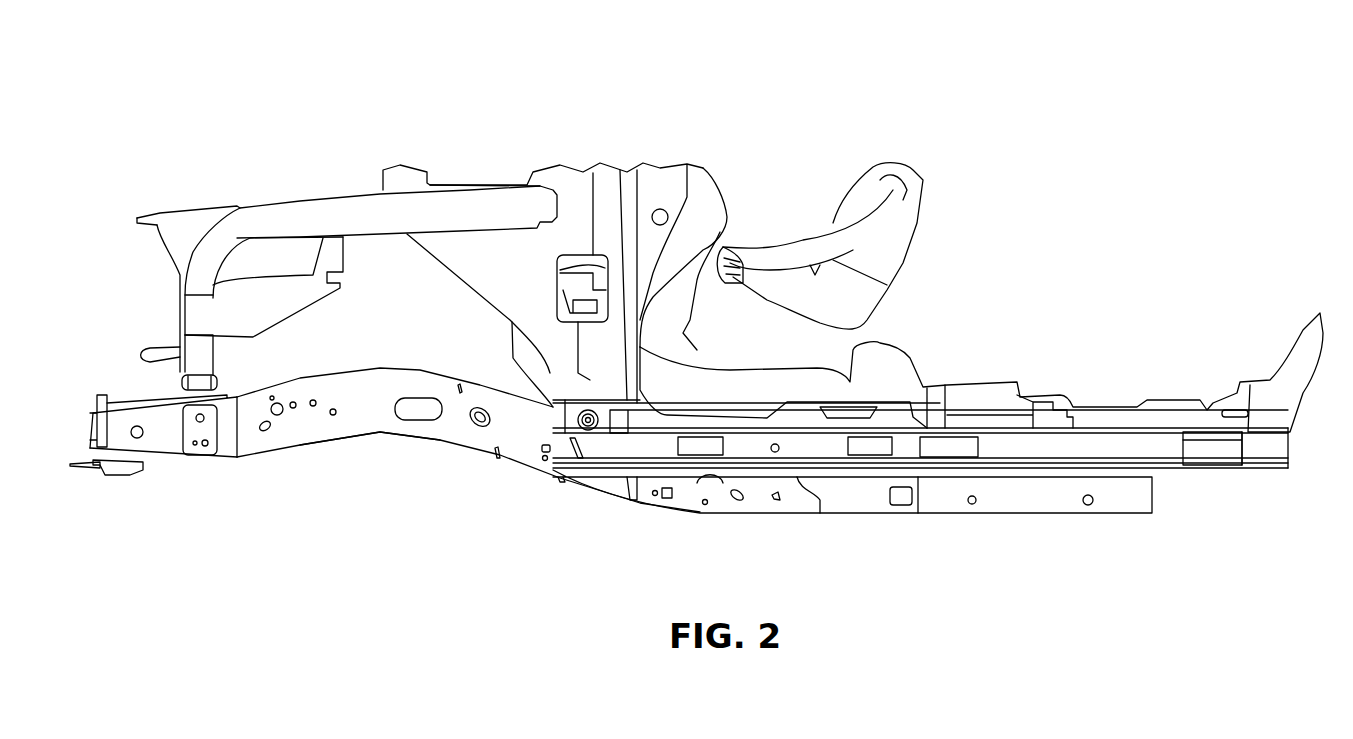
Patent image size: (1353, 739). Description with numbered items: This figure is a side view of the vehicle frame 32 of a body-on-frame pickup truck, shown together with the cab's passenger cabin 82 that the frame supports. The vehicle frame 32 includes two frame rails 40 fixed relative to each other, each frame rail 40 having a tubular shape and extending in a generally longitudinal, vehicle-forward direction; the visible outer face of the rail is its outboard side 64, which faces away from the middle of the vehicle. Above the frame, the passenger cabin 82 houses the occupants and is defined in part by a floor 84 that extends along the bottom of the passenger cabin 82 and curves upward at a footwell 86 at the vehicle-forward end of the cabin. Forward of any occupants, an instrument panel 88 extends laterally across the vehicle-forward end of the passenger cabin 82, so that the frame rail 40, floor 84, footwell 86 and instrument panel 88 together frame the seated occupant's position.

The vehicle frame 32 is at (321, 190).
The frame rail 40 is at (290, 381).
The outboard side 64 is at (357, 434).
The passenger cabin 82 is at (965, 181).
The floor 84 is at (858, 356).
The footwell 86 is at (510, 335).
The instrument panel 88 is at (722, 188).